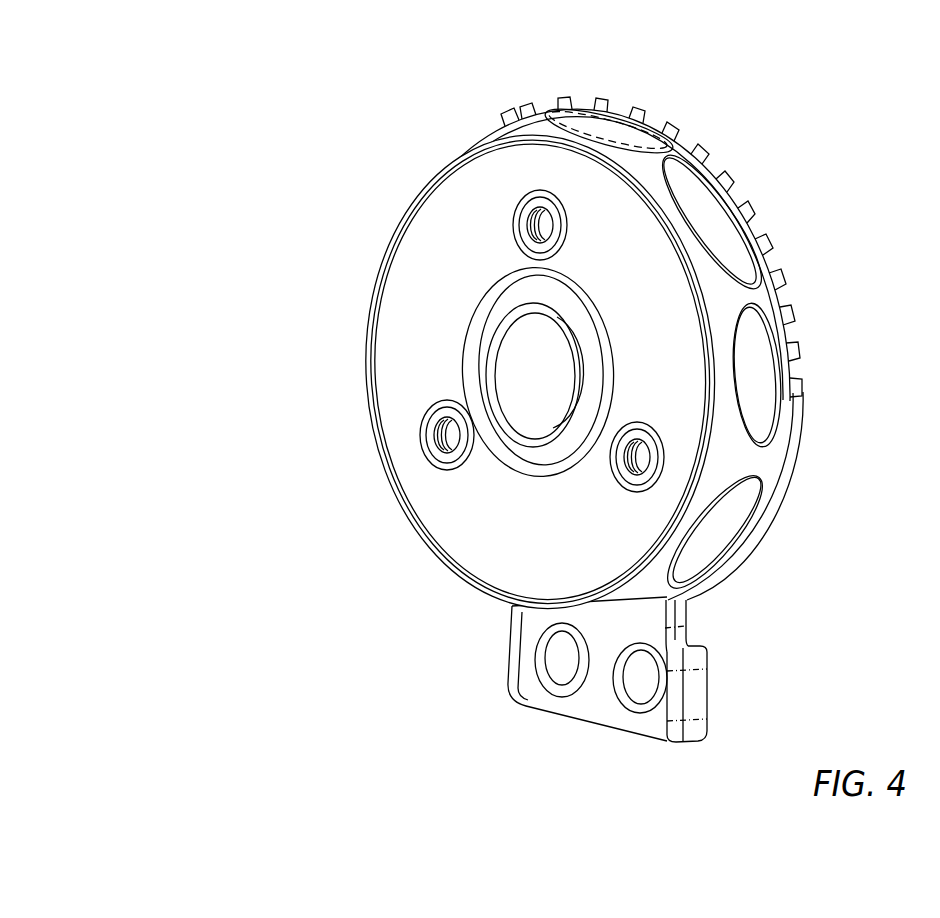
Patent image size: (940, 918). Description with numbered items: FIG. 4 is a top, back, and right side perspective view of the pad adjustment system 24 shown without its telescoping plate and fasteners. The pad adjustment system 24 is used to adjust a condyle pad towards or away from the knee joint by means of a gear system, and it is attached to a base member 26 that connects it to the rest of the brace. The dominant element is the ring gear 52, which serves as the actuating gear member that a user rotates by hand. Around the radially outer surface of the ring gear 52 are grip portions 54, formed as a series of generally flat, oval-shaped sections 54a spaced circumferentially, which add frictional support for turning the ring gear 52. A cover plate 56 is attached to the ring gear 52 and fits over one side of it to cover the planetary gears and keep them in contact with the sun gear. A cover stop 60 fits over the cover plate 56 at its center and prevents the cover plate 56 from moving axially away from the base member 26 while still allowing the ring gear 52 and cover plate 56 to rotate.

The pad adjustment system 24 is at (270, 336).
The base member 26 is at (724, 695).
The ring gear 52 is at (763, 297).
The grip portions 54 is at (650, 167).
The oval-shaped sections 54a is at (760, 383).
The cover plate 56 is at (430, 217).
The cover stop 60 is at (593, 393).